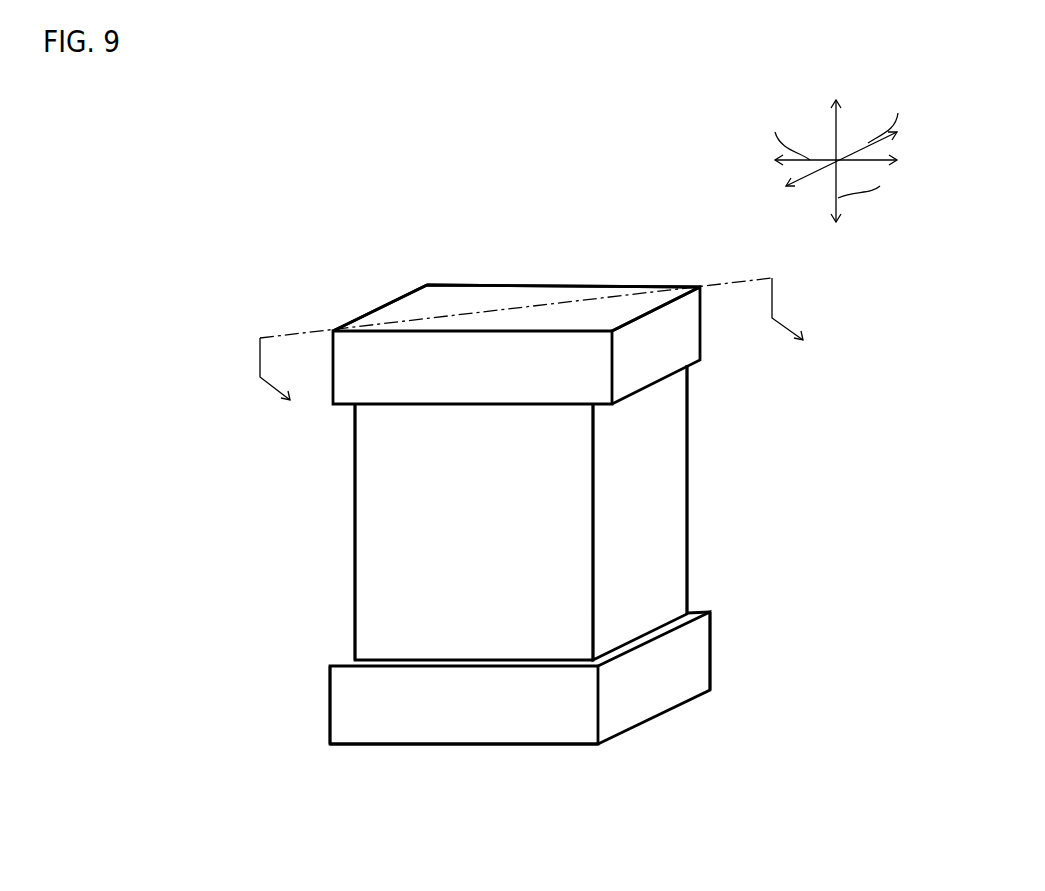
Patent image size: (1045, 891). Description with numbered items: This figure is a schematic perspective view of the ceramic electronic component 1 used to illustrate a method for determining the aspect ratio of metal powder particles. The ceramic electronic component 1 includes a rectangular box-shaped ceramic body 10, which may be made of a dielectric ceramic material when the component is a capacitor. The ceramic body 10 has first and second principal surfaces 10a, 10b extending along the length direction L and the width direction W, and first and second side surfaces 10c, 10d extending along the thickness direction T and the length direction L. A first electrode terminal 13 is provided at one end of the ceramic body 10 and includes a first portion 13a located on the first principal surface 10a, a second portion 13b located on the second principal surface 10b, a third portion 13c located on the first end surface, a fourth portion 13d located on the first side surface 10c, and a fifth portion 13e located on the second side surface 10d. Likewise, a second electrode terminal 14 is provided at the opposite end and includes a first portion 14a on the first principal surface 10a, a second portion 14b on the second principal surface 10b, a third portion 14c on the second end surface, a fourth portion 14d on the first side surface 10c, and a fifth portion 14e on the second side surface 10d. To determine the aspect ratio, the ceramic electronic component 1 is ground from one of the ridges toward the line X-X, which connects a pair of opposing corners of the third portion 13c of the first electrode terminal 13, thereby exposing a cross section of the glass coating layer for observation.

The ceramic electronic component 1 is at (651, 208).
The ceramic body 10 is at (348, 571).
The first principal surface 10a is at (408, 528).
The second principal surface 10b is at (688, 563).
The first side surface 10c is at (353, 622).
The second side surface 10d is at (677, 477).
The first electrode terminal 13 is at (577, 246).
The first portion of first electrode terminal 13a is at (405, 347).
The second portion of first electrode terminal 13b is at (530, 287).
The third portion of first electrode terminal 13c is at (475, 305).
The fourth portion of first electrode terminal 13d is at (393, 300).
The fifth portion of first electrode terminal 13e is at (663, 350).
The second electrode terminal 14 is at (545, 760).
The first portion of second electrode terminal 14a is at (357, 702).
The second portion of second electrode terminal 14b is at (710, 678).
The third portion of second electrode terminal 14c is at (470, 748).
The fourth portion of second electrode terminal 14d is at (328, 736).
The fifth portion of second electrode terminal 14e is at (688, 672).